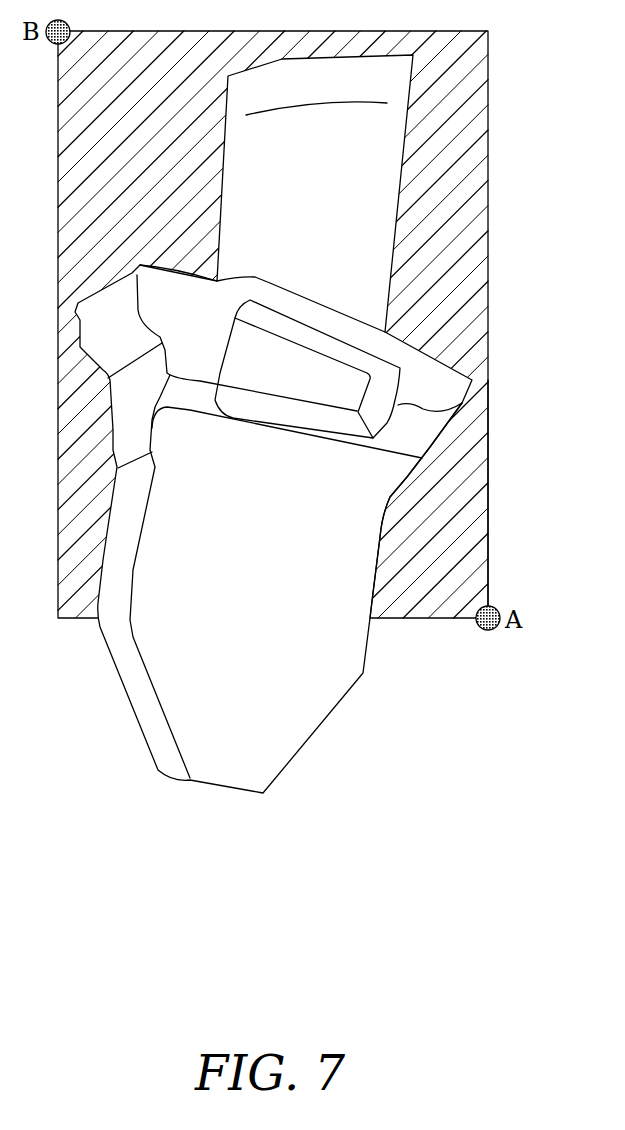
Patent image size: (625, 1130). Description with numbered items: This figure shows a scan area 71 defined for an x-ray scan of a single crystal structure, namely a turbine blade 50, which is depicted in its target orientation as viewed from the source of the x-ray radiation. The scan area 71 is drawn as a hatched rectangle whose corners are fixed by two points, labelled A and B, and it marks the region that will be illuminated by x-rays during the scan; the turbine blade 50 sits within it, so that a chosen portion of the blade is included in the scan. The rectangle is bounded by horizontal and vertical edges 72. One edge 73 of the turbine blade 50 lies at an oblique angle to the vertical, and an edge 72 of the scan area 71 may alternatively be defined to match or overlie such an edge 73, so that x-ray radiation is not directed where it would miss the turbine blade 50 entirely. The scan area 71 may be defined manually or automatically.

The scan area 71 is at (457, 213).
The edge of the scan area 72 is at (487, 437).
The edge of the single crystal structure 73 is at (377, 563).
The turbine blade 50 is at (347, 513).